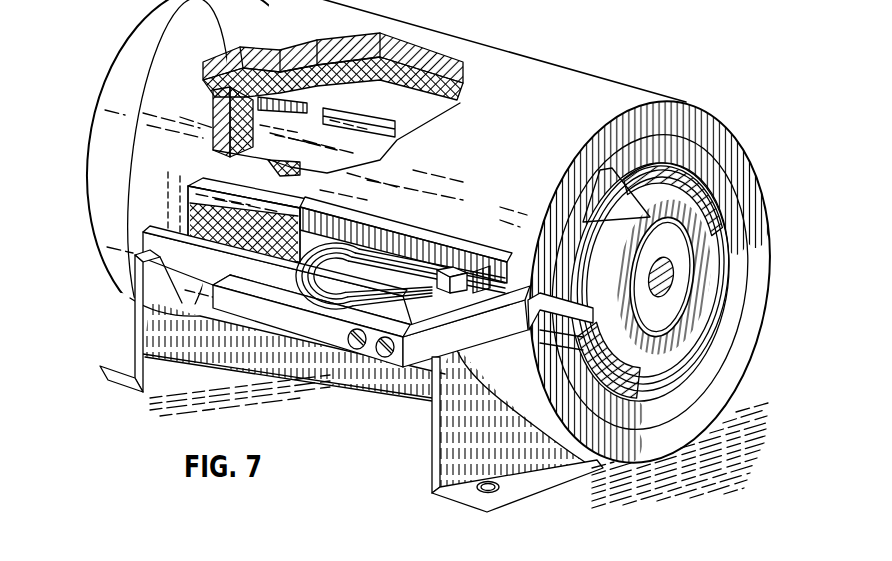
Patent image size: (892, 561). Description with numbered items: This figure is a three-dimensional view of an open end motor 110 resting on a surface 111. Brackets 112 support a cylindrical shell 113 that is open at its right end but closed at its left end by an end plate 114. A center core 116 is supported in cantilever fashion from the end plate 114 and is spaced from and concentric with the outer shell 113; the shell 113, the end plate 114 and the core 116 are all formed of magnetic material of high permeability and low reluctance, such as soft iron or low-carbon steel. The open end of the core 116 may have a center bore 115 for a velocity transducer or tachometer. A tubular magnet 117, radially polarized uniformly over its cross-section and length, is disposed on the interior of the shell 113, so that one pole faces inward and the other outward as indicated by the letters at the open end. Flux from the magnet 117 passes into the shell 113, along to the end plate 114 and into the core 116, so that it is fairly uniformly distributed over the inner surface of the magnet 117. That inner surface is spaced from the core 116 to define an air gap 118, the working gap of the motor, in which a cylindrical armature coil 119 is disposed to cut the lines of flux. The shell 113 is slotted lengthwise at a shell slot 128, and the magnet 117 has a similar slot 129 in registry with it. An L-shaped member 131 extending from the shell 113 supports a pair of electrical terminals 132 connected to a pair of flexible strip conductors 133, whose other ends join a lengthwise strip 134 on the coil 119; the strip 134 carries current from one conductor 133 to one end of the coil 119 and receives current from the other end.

The open end motor 110 is at (512, 52).
The surface 111 is at (621, 490).
The brackets 112 is at (468, 496).
The cylindrical shell 113 is at (455, 62).
The end plate 114 is at (103, 132).
The center bore 115 is at (684, 278).
The center core 116 is at (191, 199).
The tubular magnet 117 is at (454, 90).
The air gap 118 is at (311, 121).
The cylindrical coil 119 is at (417, 128).
The shell slot 128 is at (400, 238).
The magnet slot 129 is at (534, 337).
The L-shaped member 131 is at (336, 296).
The electrical terminals 132 is at (384, 358).
The flexible strip conductors 133 is at (308, 262).
The lengthwise strip 134 is at (309, 229).